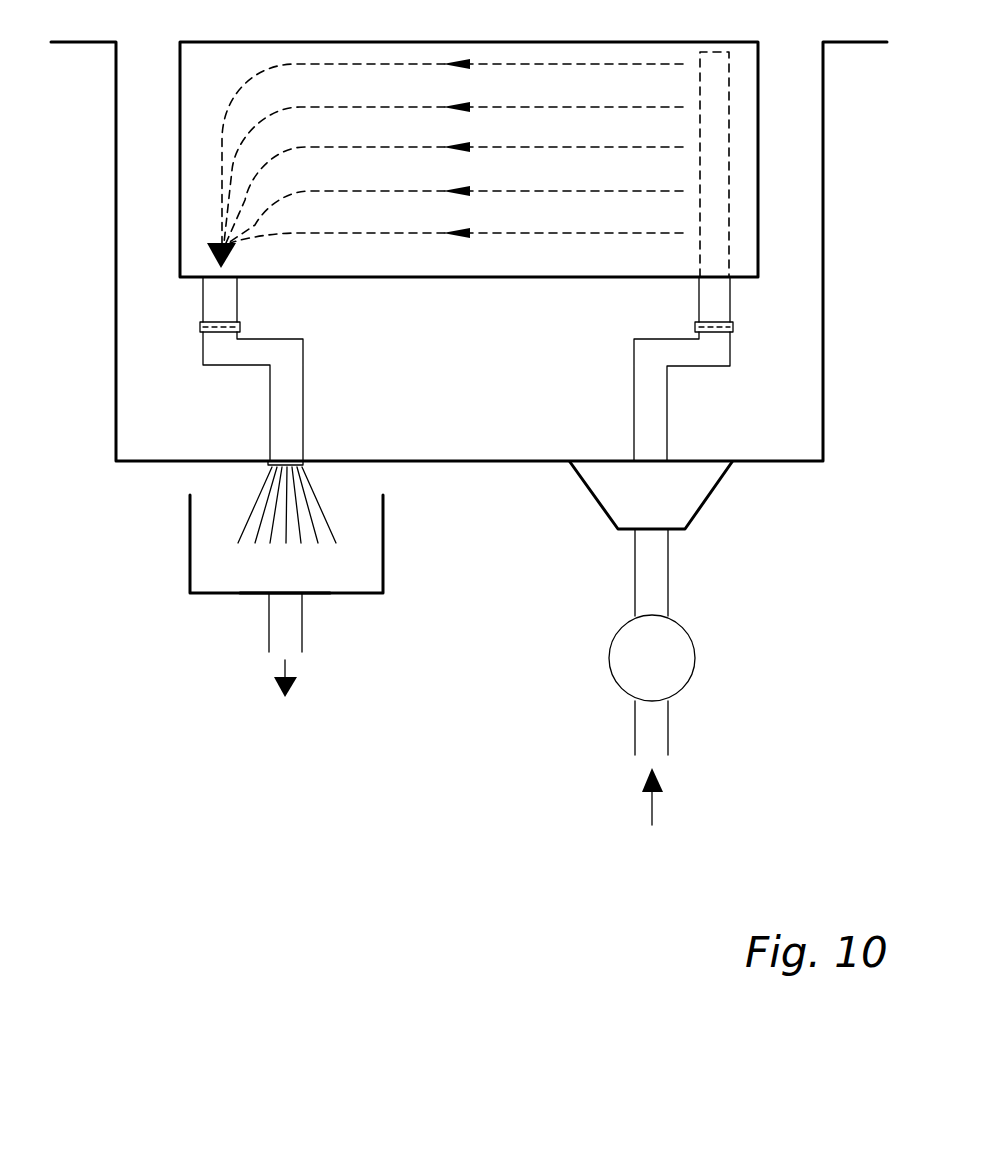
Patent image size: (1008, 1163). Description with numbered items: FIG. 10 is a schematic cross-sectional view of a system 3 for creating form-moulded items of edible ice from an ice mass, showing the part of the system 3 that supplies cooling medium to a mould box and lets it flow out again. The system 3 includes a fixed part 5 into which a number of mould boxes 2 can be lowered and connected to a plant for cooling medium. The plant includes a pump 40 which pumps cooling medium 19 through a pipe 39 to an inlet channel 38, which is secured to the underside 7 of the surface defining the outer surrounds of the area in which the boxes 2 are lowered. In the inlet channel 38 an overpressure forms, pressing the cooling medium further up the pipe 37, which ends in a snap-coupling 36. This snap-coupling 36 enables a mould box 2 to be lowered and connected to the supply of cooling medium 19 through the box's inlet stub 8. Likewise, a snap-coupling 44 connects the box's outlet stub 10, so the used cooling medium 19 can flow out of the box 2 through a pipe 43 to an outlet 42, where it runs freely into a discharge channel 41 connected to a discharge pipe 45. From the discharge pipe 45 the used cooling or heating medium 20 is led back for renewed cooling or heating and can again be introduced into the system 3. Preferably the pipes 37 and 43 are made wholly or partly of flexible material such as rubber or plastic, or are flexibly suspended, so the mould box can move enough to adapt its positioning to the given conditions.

The mould box 2 is at (180, 133).
The system 3 is at (128, 688).
The fixed part 5 is at (185, 535).
The underside 7 is at (160, 462).
The inlet stub 8 is at (699, 297).
The outlet stub 10 is at (237, 300).
The cooling medium 19 is at (653, 812).
The used cooling or heating medium 20 is at (292, 688).
The snap-coupling 36 is at (733, 324).
The pipe 37 is at (655, 397).
The inlet channel 38 is at (668, 495).
The pipe 39 is at (645, 568).
The pump 40 is at (678, 650).
The discharge channel 41 is at (213, 595).
The outlet 42 is at (317, 502).
The pipe 43 is at (285, 388).
The snap-coupling 44 is at (200, 323).
The discharge pipe 45 is at (302, 635).